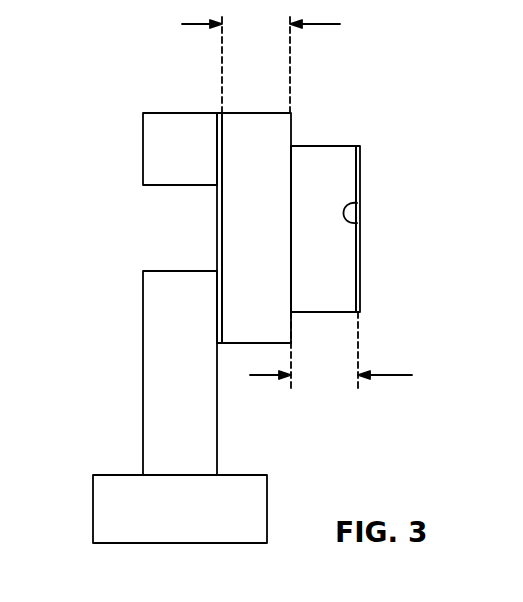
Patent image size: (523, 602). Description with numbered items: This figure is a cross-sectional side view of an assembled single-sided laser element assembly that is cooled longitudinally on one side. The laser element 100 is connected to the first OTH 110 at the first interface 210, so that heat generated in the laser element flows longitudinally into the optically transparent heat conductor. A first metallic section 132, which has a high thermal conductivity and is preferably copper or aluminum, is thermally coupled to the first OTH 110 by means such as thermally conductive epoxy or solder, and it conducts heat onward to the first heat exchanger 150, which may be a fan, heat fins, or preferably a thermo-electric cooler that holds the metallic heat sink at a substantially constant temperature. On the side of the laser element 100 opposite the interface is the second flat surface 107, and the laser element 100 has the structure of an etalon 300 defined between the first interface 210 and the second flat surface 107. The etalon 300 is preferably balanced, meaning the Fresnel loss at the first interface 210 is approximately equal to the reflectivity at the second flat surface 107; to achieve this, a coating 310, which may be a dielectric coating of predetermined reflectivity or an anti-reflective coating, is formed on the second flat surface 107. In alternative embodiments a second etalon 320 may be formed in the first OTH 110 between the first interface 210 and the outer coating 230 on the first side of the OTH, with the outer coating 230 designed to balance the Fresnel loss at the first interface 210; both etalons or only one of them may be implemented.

The laser element 100 is at (323, 146).
The second flat surface 107 is at (357, 223).
The first OTH 110 is at (256, 113).
The first metallic section 132 is at (143, 152).
The first heat exchanger 150 is at (93, 510).
The first interface 210 is at (291, 245).
The outer coating 230 is at (217, 113).
The etalon 300 is at (353, 350).
The coating 310 is at (362, 177).
The second etalon 320 is at (285, 63).